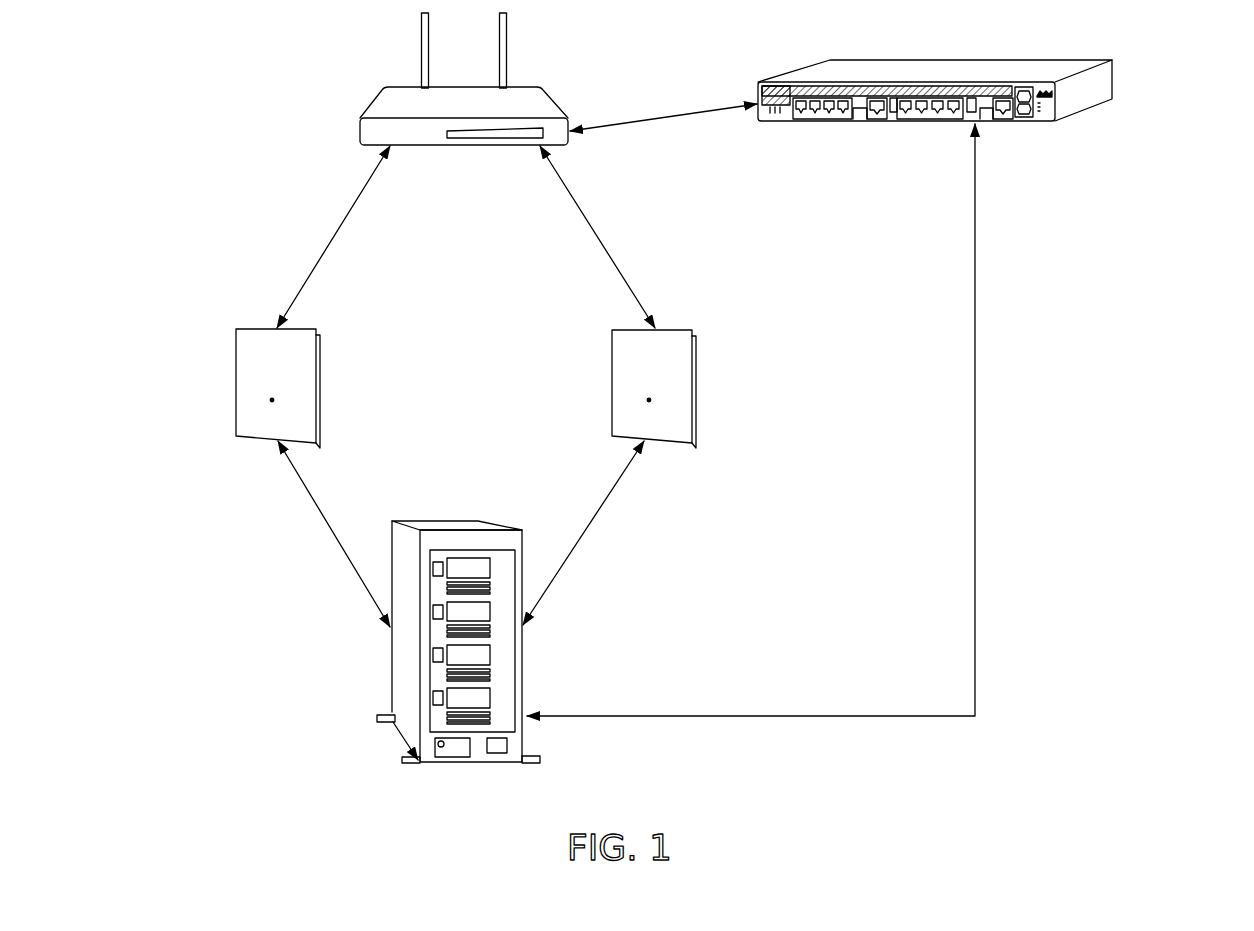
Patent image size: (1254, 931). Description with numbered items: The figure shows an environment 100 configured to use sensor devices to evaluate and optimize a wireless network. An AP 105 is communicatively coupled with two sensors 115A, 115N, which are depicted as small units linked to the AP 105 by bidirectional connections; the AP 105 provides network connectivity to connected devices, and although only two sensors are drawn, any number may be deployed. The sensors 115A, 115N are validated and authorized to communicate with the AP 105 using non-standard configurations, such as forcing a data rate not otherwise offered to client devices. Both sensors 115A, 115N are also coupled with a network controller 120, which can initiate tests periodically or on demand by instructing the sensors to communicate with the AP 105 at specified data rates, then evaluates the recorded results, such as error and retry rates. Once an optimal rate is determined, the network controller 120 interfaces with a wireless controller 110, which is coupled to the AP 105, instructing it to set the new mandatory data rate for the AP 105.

The environment 100 is at (176, 90).
The AP 105 is at (558, 105).
The wireless controller 110 is at (1105, 80).
The sensor 115A is at (320, 378).
The sensor 115N is at (696, 378).
The network controller 120 is at (523, 660).